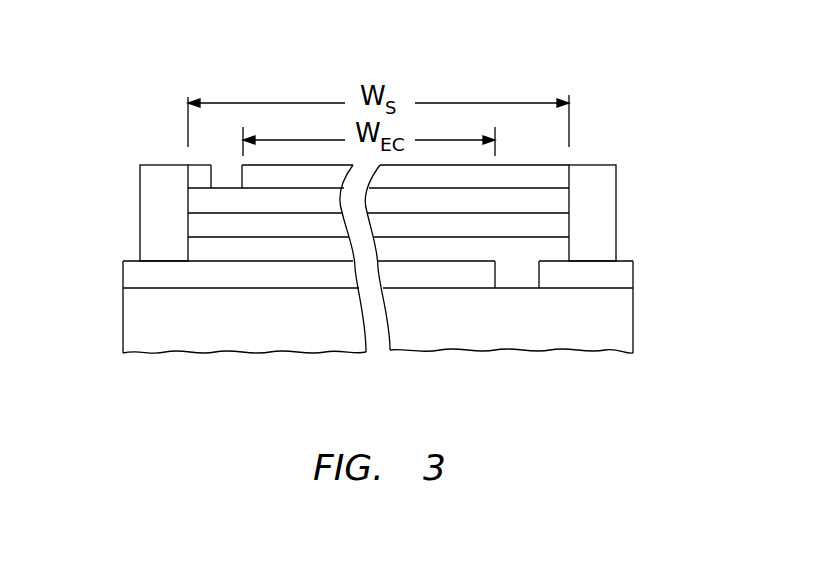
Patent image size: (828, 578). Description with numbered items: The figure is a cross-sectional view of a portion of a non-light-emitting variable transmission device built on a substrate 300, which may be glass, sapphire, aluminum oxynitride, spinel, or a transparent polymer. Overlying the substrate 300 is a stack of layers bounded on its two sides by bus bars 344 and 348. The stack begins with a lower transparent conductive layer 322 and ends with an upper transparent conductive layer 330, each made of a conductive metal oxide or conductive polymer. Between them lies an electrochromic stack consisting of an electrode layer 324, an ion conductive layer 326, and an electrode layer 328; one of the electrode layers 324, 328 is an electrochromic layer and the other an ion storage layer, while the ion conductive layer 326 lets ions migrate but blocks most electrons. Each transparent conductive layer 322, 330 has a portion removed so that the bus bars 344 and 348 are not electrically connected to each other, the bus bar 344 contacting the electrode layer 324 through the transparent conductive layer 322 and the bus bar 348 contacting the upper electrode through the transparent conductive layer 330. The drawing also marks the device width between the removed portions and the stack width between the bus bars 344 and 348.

The substrate 300 is at (617, 336).
The transparent conductive layer 322 is at (127, 272).
The electrode layer 324 is at (232, 250).
The ion conductive layer 326 is at (298, 222).
The electrode layer 328 is at (405, 205).
The transparent conductive layer 330 is at (465, 178).
The bus bar 344 is at (150, 202).
The bus bar 348 is at (607, 208).